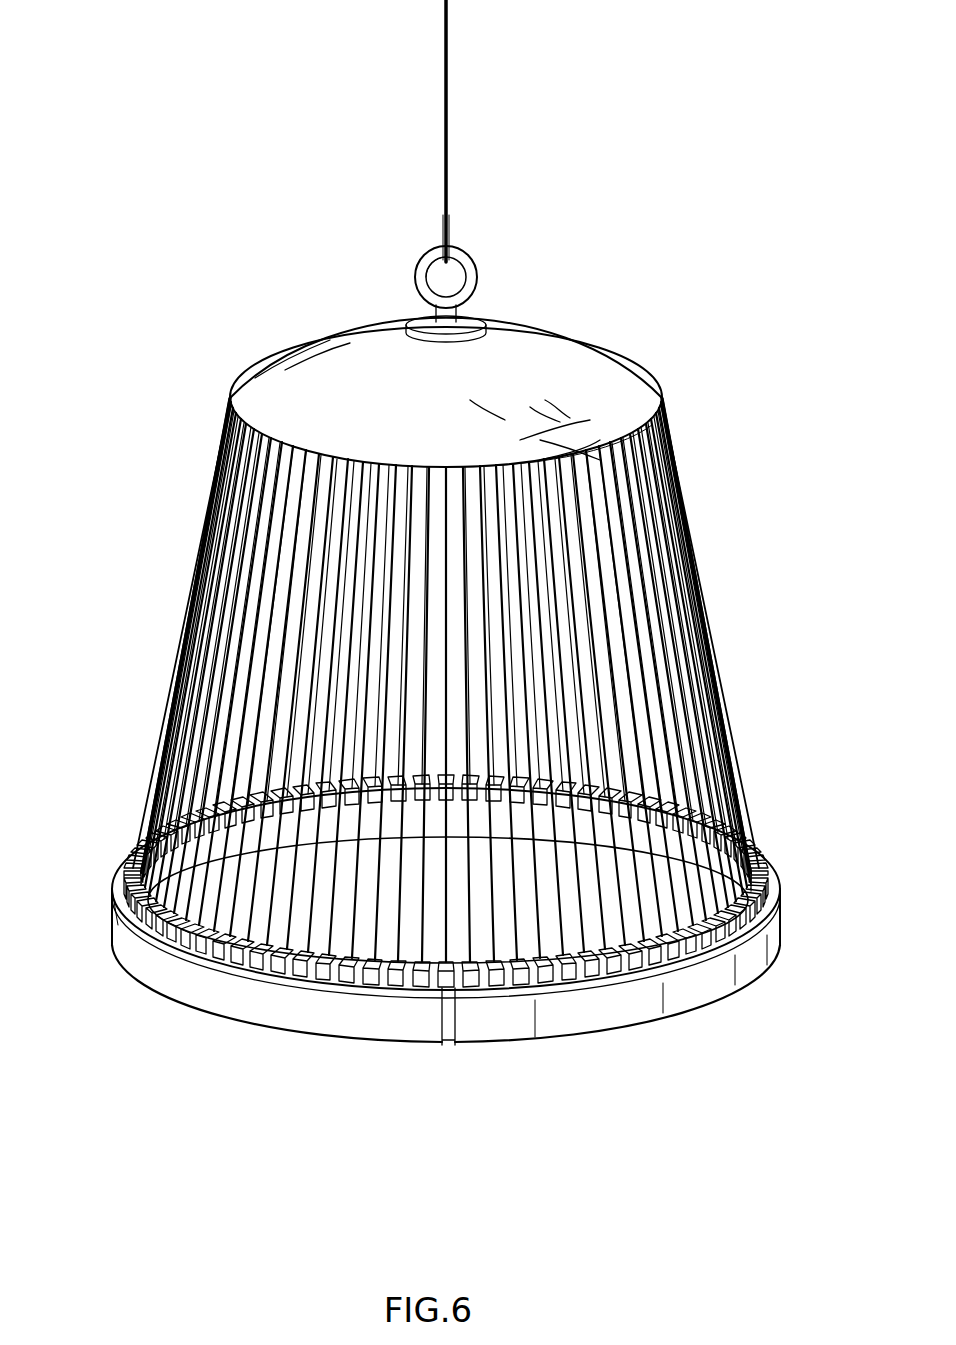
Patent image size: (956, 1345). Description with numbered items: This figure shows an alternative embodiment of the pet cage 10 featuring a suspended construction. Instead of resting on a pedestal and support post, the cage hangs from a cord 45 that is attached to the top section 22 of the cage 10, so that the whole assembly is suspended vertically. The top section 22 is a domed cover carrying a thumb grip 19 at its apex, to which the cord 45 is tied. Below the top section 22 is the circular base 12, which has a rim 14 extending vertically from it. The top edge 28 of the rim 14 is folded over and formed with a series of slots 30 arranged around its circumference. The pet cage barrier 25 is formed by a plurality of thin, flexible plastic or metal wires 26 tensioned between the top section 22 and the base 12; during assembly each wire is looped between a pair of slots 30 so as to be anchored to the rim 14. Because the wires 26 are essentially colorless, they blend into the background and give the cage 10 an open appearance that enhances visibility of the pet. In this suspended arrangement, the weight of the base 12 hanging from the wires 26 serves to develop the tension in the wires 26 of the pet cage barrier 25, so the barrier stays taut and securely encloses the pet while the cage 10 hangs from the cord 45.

The pet cage 10 is at (183, 248).
The circular base 12 is at (775, 922).
The rim 14 is at (718, 985).
The thumb grip 19 is at (477, 281).
The top section 22 is at (588, 385).
The pet cage barrier 25 is at (191, 598).
The wires 26 is at (630, 622).
The top edge 28 is at (113, 935).
The slots 30 is at (273, 967).
The cord 45 is at (448, 100).